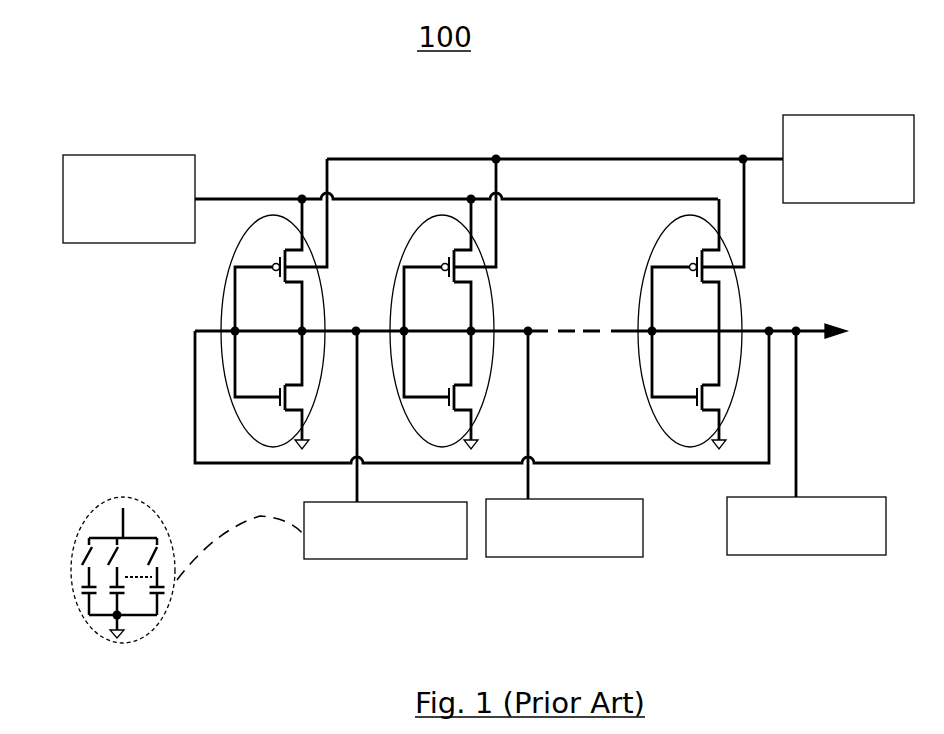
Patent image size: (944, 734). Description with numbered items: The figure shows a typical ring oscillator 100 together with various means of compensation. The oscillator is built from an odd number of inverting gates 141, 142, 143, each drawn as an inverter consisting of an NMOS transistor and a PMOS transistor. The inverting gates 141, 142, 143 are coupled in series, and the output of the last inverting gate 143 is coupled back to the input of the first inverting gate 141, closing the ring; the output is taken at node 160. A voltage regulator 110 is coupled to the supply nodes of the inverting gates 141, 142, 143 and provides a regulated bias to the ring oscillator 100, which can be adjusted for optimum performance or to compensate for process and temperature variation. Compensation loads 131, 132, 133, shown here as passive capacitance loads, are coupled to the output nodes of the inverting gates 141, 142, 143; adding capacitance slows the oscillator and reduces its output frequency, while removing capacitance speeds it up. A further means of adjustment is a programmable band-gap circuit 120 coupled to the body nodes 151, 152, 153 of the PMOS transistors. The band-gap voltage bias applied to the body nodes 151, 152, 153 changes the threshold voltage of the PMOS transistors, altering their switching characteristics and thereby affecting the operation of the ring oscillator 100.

The ring oscillator 100 is at (510, 329).
The voltage regulator 110 is at (114, 154).
The programmable band-gap circuit 120 is at (812, 114).
The compensation load 131 is at (343, 560).
The compensation load 132 is at (521, 558).
The compensation load 133 is at (790, 556).
The inverting gate 141 is at (278, 304).
The inverting gate 142 is at (480, 304).
The inverting gate 143 is at (700, 304).
The body node 151 is at (327, 254).
The body node 152 is at (496, 254).
The body node 153 is at (744, 254).
The output terminal 160 is at (790, 328).